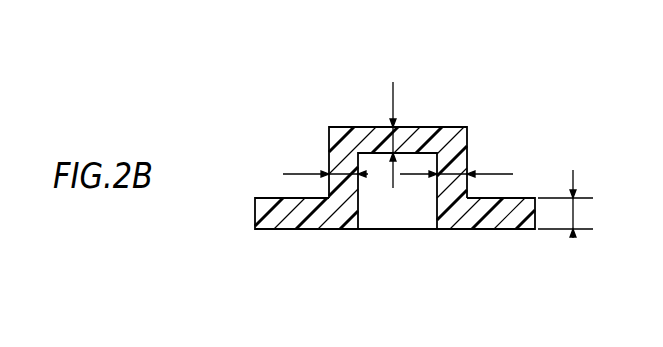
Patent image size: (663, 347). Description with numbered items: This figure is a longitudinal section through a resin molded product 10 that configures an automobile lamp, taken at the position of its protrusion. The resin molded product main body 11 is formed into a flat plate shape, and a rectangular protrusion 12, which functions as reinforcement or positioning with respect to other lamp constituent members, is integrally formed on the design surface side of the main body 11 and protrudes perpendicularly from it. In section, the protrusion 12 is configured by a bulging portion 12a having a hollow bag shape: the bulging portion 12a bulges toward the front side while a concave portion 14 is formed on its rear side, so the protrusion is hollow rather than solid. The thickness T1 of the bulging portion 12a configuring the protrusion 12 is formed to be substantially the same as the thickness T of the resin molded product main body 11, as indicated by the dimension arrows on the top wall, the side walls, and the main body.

The resin molded product 10 is at (393, 154).
The resin molded product main body 11 is at (268, 197).
The protrusion 12 is at (439, 127).
The bulging portion 12a is at (443, 127).
The concave portion 14 is at (358, 200).
The thickness of the resin molded product main body T is at (565, 204).
The thickness of the bulging portion T1 is at (398, 135).